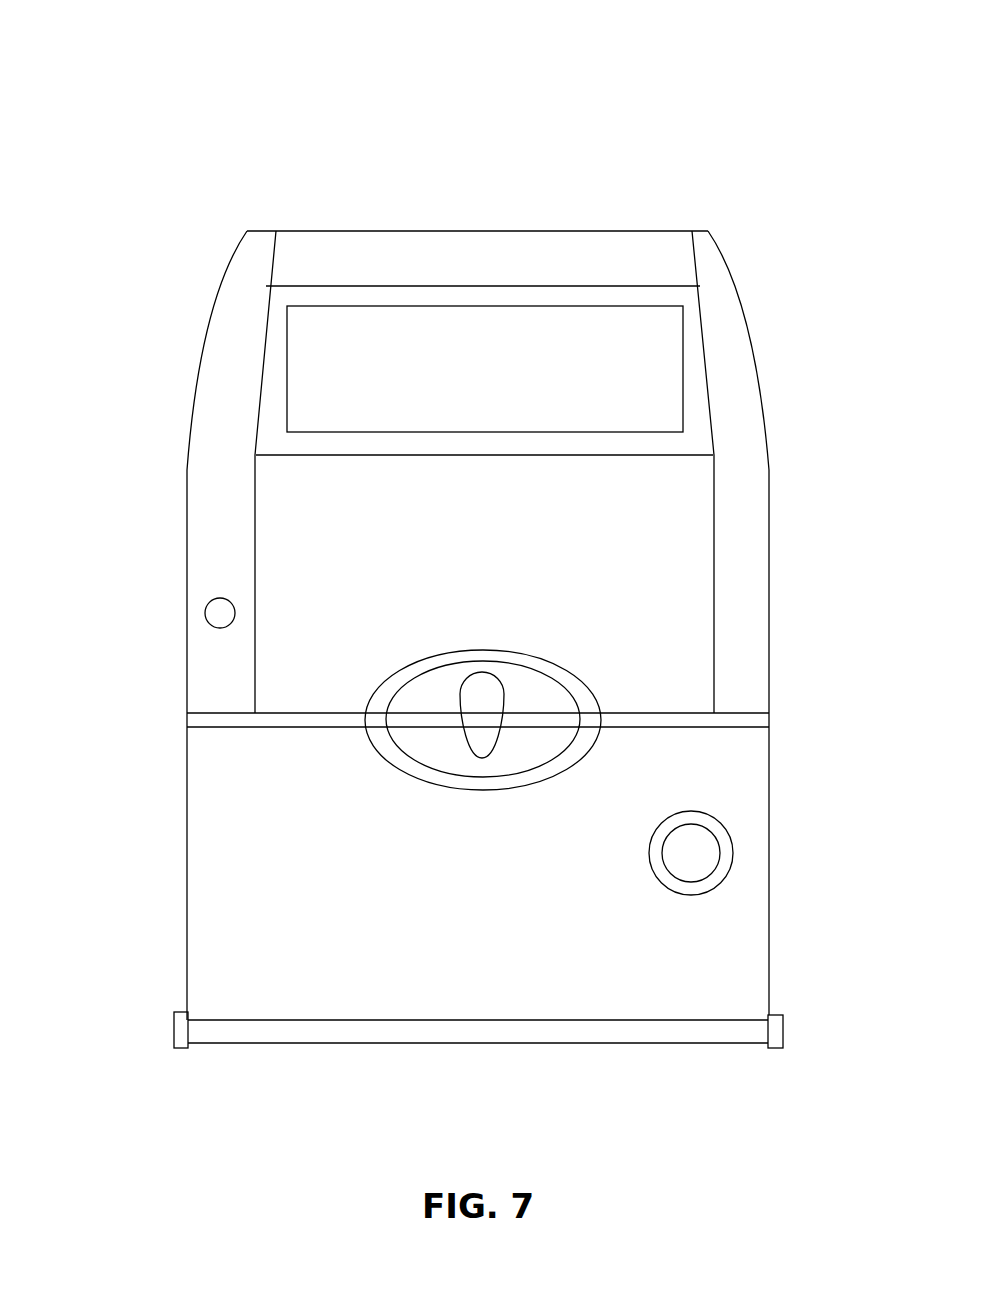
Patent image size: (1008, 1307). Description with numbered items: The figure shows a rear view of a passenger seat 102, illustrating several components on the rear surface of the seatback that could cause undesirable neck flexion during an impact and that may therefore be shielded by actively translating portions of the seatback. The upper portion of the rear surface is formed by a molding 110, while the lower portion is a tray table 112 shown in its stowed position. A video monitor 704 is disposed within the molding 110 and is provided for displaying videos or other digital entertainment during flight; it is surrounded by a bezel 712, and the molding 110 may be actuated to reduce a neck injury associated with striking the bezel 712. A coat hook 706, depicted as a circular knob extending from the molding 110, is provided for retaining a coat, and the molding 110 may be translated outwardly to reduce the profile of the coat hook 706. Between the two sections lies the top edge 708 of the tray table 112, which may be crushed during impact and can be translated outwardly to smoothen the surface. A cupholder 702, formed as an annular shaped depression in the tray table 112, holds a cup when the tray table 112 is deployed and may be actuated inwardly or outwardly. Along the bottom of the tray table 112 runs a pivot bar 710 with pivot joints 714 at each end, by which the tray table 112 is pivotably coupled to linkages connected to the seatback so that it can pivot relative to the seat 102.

The passenger seat 102 is at (85, 49).
The molding 110 is at (187, 550).
The tray table 112 is at (187, 860).
The cupholder 702 is at (717, 872).
The video monitor 704 is at (512, 381).
The coat hook 706 is at (205, 615).
The top edge 708 is at (737, 728).
The pivot bar 710 is at (323, 1028).
The bezel 712 is at (685, 354).
The pivot joints 714 is at (173, 1028).